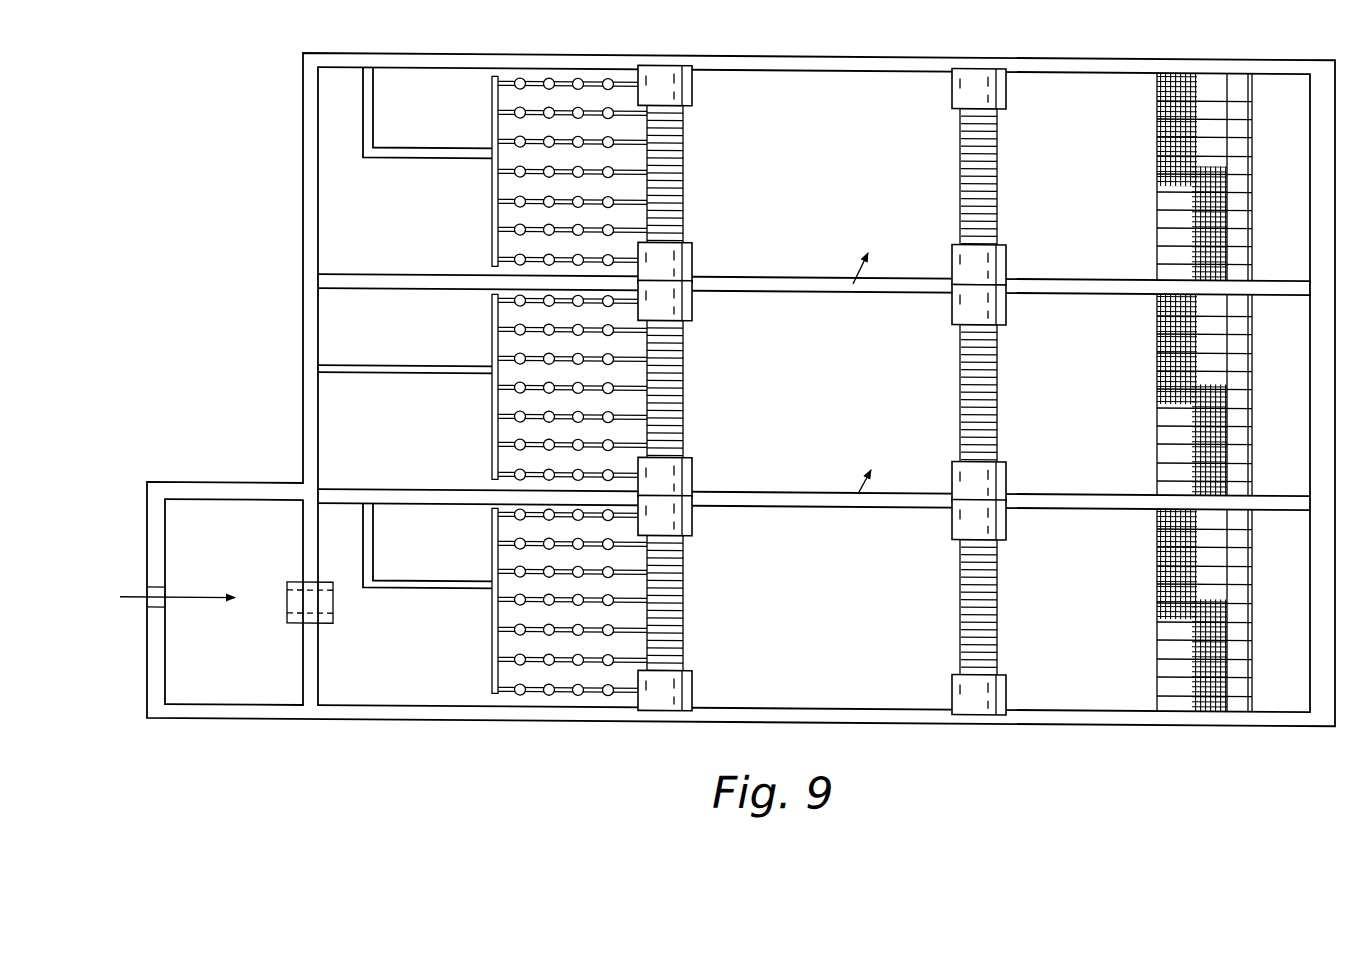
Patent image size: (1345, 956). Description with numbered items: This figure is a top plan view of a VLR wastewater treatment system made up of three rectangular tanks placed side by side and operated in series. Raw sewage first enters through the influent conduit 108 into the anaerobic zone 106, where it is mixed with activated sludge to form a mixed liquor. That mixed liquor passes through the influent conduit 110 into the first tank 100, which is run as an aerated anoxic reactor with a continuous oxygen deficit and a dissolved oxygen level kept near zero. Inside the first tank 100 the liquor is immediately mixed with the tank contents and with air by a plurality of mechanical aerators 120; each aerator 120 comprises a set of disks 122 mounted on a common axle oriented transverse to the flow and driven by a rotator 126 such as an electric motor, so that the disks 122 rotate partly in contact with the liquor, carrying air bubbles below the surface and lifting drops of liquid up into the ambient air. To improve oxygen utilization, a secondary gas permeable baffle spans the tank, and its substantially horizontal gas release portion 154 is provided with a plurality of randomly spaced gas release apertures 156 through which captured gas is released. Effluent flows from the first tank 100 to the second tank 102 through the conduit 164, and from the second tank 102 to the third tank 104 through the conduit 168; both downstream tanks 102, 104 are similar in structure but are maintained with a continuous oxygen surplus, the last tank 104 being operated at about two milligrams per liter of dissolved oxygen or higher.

The first tank 100 is at (392, 670).
The second VLR tank 102 is at (335, 404).
The third VLR tank 104 is at (731, 146).
The anaerobic zone 106 is at (177, 531).
The influent conduit 108 is at (148, 597).
The influent conduit 110 is at (292, 603).
The mechanical aerator 120 is at (660, 411).
The disks 122 is at (683, 642).
The rotator 126 is at (672, 695).
The gas release portion 154 is at (505, 93).
The gas release apertures 156 is at (522, 77).
The conduit 164 is at (850, 505).
The conduit 168 is at (846, 292).